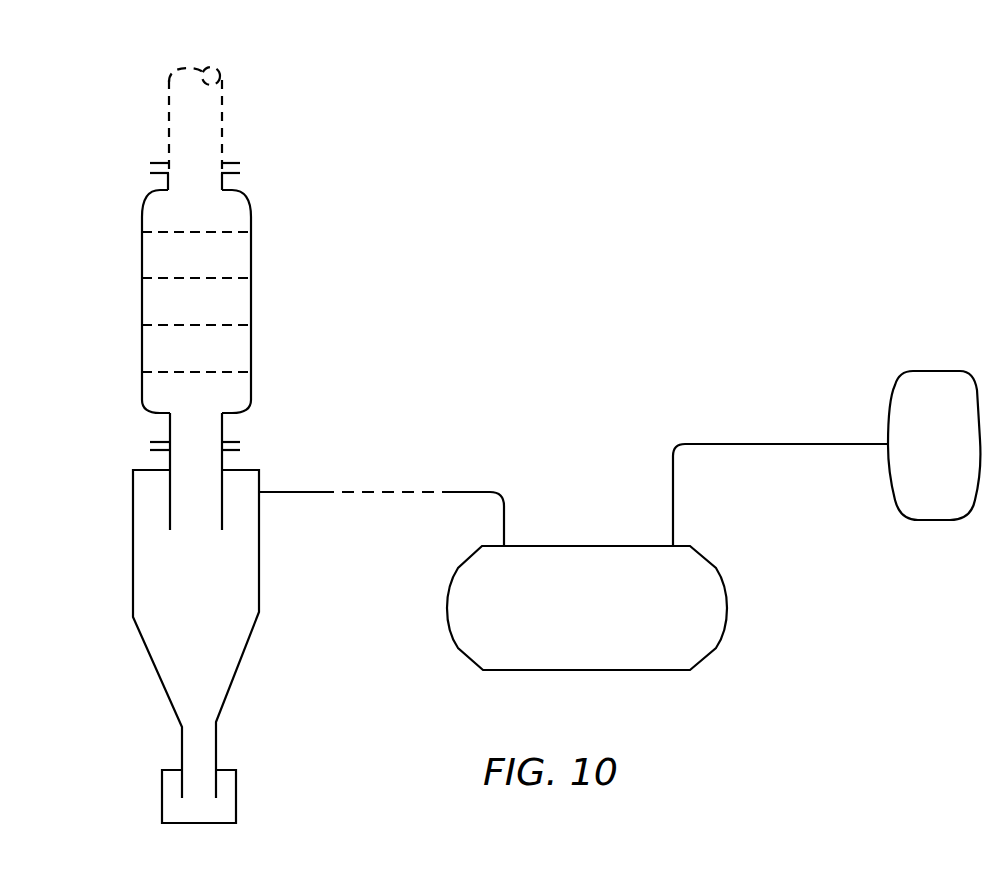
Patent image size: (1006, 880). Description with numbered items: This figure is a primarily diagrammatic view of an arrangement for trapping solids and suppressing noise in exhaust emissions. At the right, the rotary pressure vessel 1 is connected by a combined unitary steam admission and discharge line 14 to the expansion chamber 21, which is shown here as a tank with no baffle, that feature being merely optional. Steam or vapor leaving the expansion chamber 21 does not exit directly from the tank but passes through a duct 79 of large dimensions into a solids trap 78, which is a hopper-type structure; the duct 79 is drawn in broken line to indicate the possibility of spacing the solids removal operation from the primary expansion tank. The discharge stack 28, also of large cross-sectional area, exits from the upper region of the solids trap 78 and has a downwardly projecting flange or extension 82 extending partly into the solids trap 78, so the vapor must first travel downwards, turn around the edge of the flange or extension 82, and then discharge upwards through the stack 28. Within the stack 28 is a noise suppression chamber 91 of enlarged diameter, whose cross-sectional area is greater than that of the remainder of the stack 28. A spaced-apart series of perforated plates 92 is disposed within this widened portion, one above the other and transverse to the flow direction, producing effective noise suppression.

The rotary pressure vessel 1 is at (897, 405).
The combined unitary steam admission and discharge line 14 is at (762, 442).
The expansion chamber 21 is at (558, 553).
The discharge stack 28 is at (232, 133).
The solids trap 78 is at (235, 650).
The duct 79 is at (460, 492).
The downwardly projecting flange or extension 82 is at (222, 513).
The noise suppression chamber 91 is at (251, 298).
The perforated plates 92 is at (212, 232).